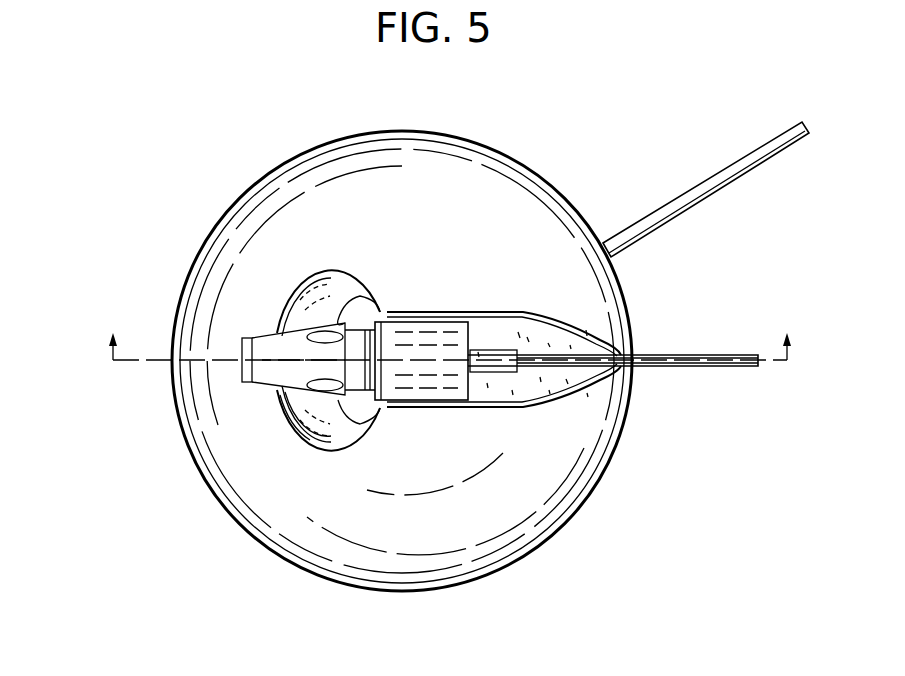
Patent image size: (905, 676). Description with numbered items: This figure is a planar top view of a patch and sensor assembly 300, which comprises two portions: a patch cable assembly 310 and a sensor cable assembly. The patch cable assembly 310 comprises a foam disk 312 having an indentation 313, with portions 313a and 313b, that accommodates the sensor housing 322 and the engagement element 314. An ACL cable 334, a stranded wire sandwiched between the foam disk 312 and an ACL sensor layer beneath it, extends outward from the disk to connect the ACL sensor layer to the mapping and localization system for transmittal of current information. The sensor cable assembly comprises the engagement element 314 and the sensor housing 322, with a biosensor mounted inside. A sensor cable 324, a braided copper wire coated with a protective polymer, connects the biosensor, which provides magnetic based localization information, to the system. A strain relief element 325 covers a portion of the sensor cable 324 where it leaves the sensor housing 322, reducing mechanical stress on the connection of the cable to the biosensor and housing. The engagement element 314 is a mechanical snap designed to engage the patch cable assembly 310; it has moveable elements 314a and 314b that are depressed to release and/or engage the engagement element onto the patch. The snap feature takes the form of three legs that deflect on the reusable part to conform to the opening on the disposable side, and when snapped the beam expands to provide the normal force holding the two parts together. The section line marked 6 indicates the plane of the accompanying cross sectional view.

The patch and sensor assembly 300 is at (152, 178).
The patch cable assembly 310 is at (289, 153).
The foam disk 312 is at (460, 154).
The indentation 313 is at (325, 433).
The indentation portion 313a is at (303, 413).
The indentation portion 313b is at (570, 378).
The engagement element 314 is at (271, 343).
The moveable element 314a is at (367, 302).
The moveable element 314b is at (360, 423).
The sensor housing 322 is at (470, 391).
The sensor cable 324 is at (720, 367).
The strain relief element 325 is at (497, 348).
The ACL cable 334 is at (672, 202).
The section line 6 is at (451, 345).